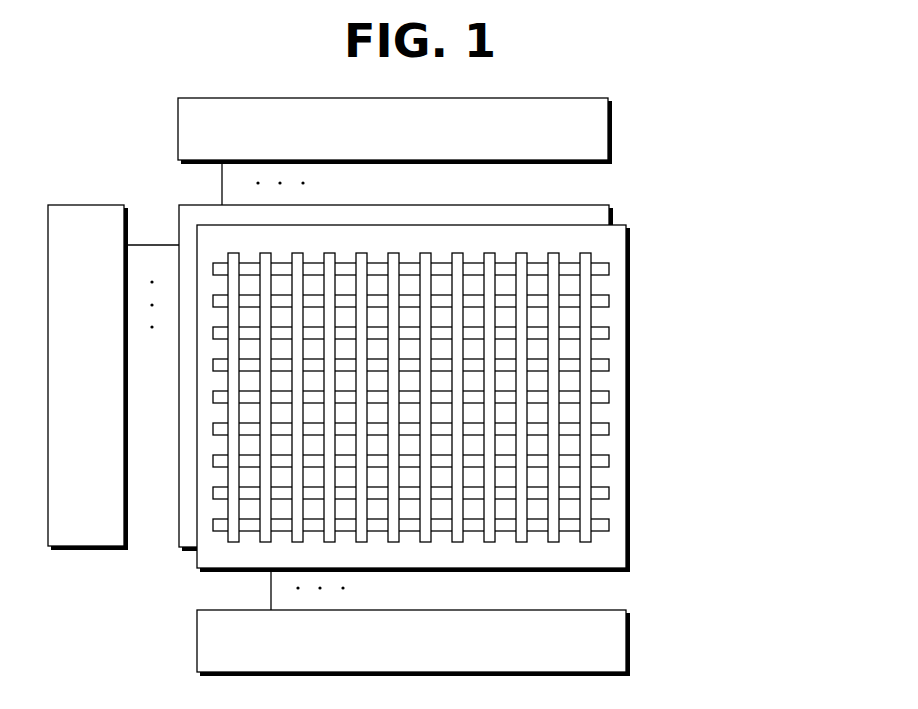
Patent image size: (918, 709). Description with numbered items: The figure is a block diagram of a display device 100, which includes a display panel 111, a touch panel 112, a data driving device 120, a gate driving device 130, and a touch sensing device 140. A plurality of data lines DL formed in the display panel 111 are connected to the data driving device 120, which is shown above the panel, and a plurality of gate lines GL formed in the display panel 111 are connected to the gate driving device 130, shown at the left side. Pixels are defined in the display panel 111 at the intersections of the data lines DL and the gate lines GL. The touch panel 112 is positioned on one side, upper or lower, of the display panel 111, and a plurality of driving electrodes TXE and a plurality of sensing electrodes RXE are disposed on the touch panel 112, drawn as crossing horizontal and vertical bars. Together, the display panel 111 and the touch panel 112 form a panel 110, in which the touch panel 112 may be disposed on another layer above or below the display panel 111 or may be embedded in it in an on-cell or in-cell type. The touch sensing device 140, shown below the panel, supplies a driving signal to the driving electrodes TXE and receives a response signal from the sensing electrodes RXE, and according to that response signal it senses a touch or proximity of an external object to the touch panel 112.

The display device 100 is at (62, 142).
The panel 110 is at (493, 391).
The display panel 111 is at (613, 215).
The touch panel 112 is at (455, 401).
The data driving device 120 is at (371, 143).
The gate driving device 130 is at (66, 381).
The touch sensing device 140 is at (388, 655).
The data line DL is at (200, 182).
The gate line GL is at (153, 230).
The driving electrode TXE is at (609, 524).
The sensing electrode RXE is at (593, 541).